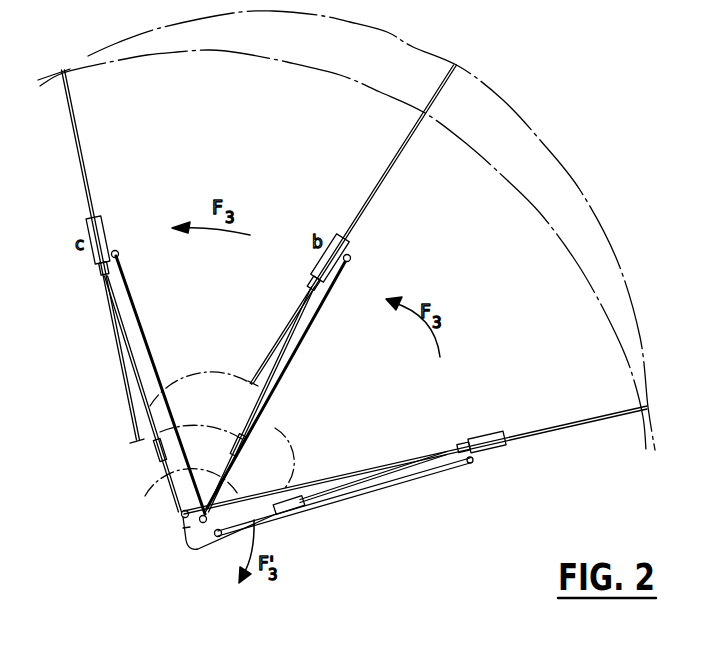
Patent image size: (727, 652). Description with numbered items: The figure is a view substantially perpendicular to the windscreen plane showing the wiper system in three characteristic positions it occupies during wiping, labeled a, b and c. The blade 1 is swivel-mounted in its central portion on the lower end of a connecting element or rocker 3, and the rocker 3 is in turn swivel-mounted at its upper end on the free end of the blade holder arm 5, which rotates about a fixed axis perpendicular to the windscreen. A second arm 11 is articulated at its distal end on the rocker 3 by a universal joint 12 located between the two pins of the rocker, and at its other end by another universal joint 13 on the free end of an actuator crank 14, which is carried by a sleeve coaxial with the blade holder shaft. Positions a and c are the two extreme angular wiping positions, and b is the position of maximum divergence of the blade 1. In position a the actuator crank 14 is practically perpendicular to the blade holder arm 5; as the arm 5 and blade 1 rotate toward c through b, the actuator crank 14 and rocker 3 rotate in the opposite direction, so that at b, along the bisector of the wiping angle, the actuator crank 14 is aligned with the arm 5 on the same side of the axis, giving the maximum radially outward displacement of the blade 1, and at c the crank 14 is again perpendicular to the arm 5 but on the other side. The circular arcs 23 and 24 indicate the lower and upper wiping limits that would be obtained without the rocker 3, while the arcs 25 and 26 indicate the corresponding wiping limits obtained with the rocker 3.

The blade 1 is at (598, 420).
The connecting element or rocker 3 is at (503, 448).
The blade holder arm 5 is at (337, 492).
The second arm 11 is at (420, 477).
The universal joint 12 is at (470, 464).
The universal joint 13 is at (181, 522).
The actuator crank 14 is at (185, 538).
The circular arc 23 is at (283, 422).
The circular arc 24 is at (517, 183).
The arc 25 is at (200, 372).
The arc 26 is at (507, 101).